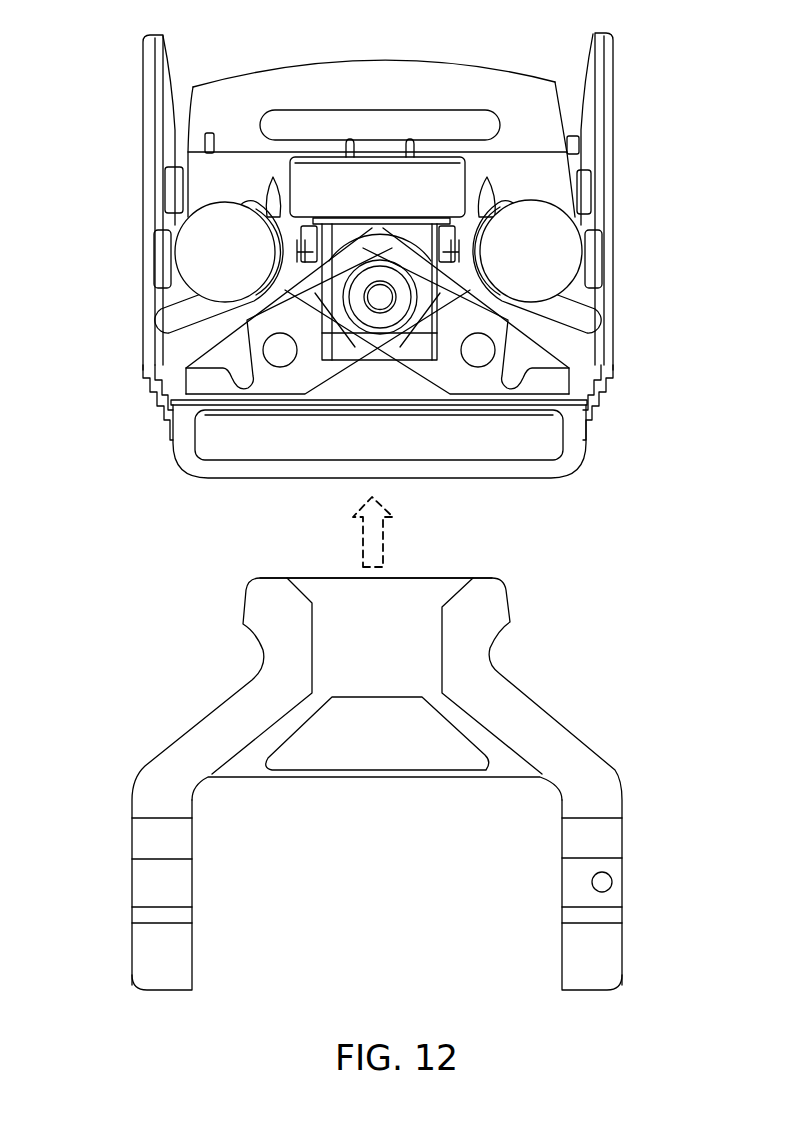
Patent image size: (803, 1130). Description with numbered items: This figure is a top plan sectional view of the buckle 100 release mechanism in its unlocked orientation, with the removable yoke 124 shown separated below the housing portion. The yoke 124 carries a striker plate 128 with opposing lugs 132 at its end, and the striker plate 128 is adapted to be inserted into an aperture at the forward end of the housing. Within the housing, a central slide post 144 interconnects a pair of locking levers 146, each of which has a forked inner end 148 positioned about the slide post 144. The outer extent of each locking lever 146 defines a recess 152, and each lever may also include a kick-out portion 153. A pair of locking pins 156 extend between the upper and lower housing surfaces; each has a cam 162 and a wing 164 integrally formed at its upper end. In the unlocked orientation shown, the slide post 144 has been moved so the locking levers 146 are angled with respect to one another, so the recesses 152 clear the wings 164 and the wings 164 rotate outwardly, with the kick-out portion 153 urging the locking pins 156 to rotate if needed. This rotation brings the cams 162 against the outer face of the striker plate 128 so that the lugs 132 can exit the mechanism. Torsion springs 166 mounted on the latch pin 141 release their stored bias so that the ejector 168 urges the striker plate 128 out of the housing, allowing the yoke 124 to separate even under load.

The buckle 100 is at (56, 246).
The removable yoke 124 is at (616, 838).
The striker plate 128 is at (393, 745).
The lugs 132 is at (512, 603).
The latch pin 141 is at (592, 188).
The slide post 144 is at (386, 298).
The locking levers 146 is at (482, 384).
The forked inner end 148 is at (405, 247).
The recess 152 is at (520, 378).
The kick-out portion 153 is at (186, 368).
The locking pins 156 is at (572, 232).
The cam 162 is at (500, 198).
The wing 164 is at (598, 320).
The torsion springs 166 is at (350, 140).
The ejector 168 is at (438, 162).